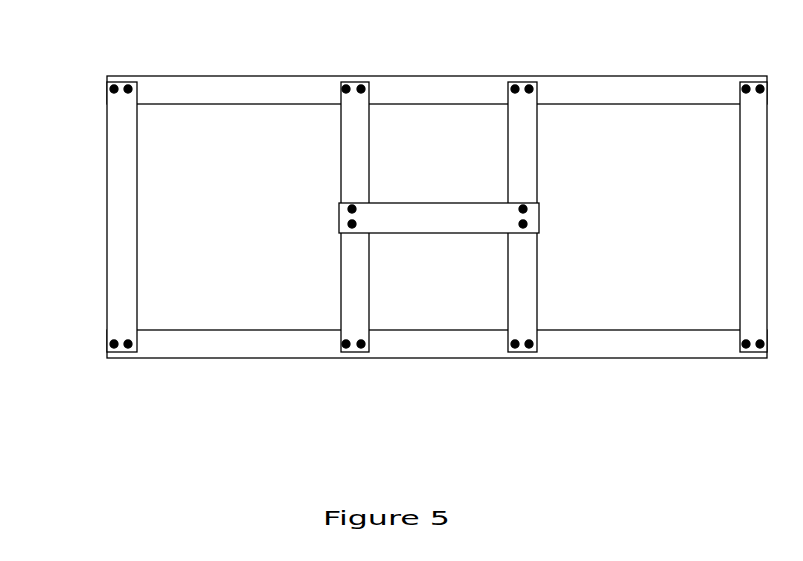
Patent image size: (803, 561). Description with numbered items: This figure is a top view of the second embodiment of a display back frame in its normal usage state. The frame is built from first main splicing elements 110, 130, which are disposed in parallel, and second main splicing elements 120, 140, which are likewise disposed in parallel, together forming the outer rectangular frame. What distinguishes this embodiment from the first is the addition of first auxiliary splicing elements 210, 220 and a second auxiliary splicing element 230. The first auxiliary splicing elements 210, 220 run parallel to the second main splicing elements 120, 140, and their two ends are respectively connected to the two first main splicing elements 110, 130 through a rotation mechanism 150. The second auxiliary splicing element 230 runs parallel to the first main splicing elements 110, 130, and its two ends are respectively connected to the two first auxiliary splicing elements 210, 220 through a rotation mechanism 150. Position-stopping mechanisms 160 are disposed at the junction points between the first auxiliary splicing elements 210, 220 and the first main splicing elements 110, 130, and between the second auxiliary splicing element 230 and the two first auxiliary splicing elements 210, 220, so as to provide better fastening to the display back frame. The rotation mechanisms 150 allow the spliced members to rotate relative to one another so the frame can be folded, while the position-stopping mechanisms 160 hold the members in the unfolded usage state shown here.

The first main splicing element 110 is at (619, 90).
The second main splicing element 120 is at (752, 139).
The first main splicing element 130 is at (618, 346).
The second main splicing element 140 is at (126, 138).
The rotation mechanism 150 is at (113, 78).
The position-stopping mechanism 160 is at (130, 78).
The first auxiliary splicing element 210 is at (353, 179).
The first auxiliary splicing element 220 is at (522, 180).
The second auxiliary splicing element 230 is at (388, 230).